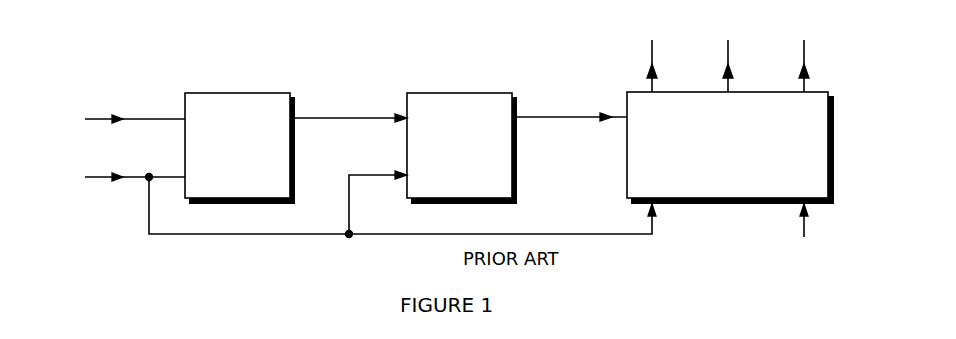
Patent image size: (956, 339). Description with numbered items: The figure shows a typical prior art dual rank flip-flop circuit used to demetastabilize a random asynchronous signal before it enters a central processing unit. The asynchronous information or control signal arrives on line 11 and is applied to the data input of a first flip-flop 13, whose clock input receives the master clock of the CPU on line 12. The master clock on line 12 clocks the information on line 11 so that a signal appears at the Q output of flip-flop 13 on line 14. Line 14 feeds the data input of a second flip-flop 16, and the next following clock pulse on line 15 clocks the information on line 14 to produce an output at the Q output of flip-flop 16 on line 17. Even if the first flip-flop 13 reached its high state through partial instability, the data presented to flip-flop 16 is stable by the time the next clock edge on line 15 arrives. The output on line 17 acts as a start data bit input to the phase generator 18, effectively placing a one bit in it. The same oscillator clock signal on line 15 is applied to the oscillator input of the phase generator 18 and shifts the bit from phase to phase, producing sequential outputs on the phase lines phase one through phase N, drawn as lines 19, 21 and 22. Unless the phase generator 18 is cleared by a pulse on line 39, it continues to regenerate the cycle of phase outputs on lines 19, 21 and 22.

The line 11 is at (148, 115).
The line 12 is at (141, 178).
The flip-flop 13 is at (255, 92).
The line 14 is at (350, 113).
The line 15 is at (206, 236).
The flip-flop 16 is at (472, 91).
The line 17 is at (563, 121).
The phase generator 18 is at (737, 205).
The line 19 is at (650, 63).
The line 21 is at (726, 63).
The line 22 is at (802, 63).
The line 39 is at (803, 229).